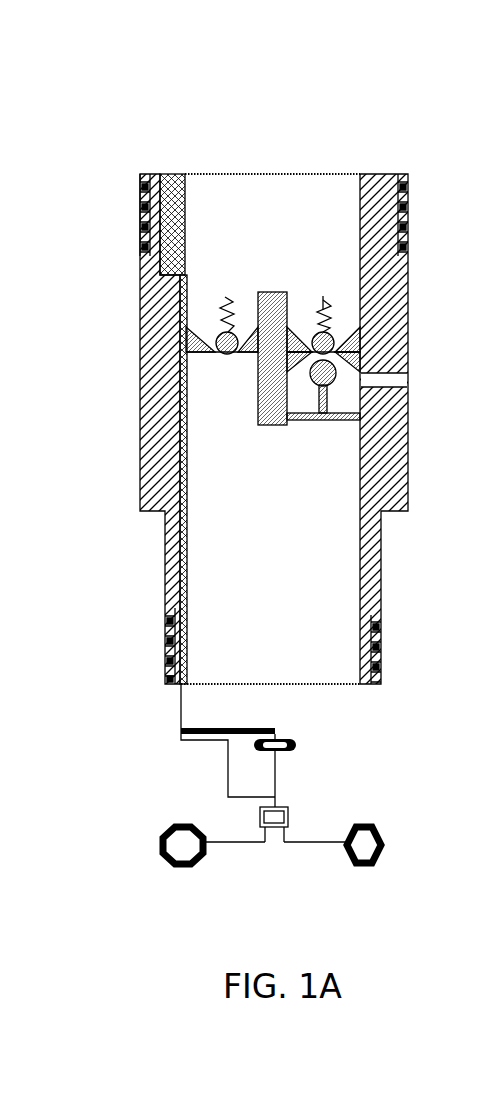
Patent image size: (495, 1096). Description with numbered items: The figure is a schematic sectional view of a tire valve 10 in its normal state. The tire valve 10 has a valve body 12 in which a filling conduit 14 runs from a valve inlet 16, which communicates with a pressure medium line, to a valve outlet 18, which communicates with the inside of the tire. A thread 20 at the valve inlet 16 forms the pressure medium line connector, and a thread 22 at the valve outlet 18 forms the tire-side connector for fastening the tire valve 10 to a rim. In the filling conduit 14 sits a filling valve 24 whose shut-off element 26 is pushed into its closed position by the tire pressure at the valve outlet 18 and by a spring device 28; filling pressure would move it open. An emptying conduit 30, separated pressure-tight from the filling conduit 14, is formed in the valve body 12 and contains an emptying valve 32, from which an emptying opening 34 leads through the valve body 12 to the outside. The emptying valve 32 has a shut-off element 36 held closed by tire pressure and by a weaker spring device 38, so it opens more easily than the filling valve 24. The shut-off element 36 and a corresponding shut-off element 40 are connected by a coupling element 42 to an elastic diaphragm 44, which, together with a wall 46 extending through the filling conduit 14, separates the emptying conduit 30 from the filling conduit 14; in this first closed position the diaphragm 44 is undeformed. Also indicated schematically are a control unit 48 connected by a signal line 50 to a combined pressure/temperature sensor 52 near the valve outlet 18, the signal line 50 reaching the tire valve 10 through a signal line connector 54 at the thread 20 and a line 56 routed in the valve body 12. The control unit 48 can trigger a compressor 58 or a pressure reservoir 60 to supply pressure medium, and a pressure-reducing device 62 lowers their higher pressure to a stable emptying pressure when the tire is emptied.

The tire valve 10 is at (92, 140).
The valve body 12 is at (416, 512).
The filling conduit 14 is at (290, 549).
The valve inlet 16 is at (284, 692).
The valve outlet 18 is at (270, 168).
The thread 20 is at (385, 652).
The thread 22 is at (143, 225).
The filling valve 24 is at (205, 326).
The shut-off element 26 is at (222, 353).
The spring device 28 is at (225, 297).
The emptying conduit 30 is at (318, 400).
The emptying valve 32 is at (366, 306).
The emptying opening 34 is at (392, 380).
The shut-off element 36 is at (362, 343).
The spring device 38 is at (342, 318).
The corresponding shut-off element 40 is at (333, 386).
The coupling element 42 is at (365, 418).
The elastic diaphragm 44 is at (338, 424).
The wall 46 is at (262, 400).
The control unit 48 is at (290, 814).
The signal line 50 is at (181, 728).
The combined pressure/temperature sensor 52 is at (172, 173).
The signal line connector 54 is at (166, 672).
The line 56 is at (167, 542).
The compressor 58 is at (200, 859).
The pressure reservoir 60 is at (378, 862).
The pressure-reducing device 62 is at (262, 750).